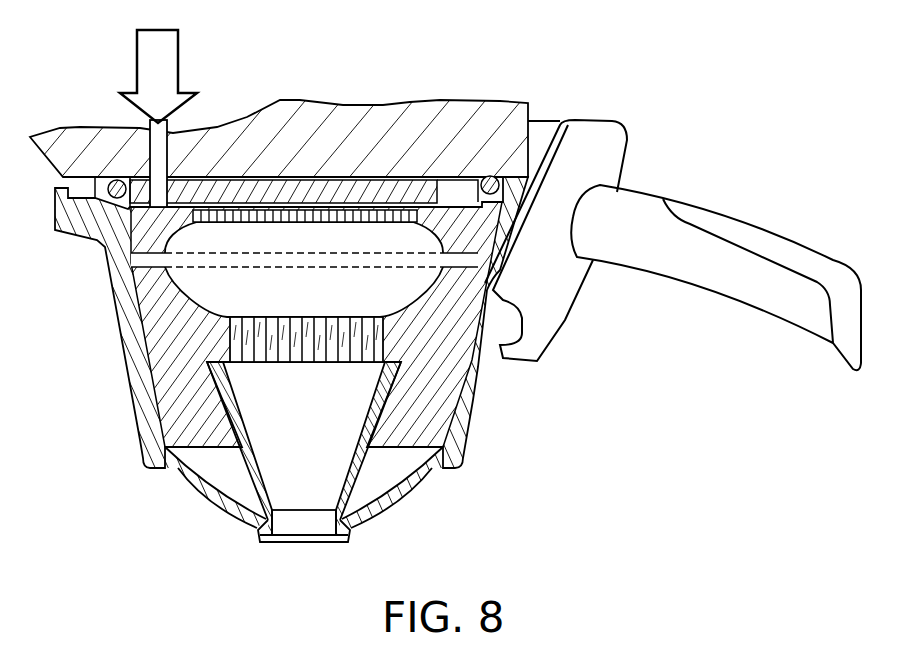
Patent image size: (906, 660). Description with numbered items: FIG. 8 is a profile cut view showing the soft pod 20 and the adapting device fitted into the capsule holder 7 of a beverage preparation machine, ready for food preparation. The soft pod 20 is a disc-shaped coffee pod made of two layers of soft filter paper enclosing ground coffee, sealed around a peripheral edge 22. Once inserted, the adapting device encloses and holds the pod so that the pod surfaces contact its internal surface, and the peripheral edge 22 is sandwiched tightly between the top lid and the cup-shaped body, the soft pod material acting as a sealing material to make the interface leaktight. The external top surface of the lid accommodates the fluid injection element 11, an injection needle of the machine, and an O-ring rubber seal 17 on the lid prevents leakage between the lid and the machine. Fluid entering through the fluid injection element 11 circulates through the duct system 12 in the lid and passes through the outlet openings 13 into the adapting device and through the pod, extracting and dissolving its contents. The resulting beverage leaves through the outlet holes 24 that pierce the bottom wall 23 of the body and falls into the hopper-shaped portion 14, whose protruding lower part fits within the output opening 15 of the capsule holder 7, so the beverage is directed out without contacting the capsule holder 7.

The capsule holder 7 is at (597, 133).
The fluid injection element 11 is at (317, 113).
The duct system 12 is at (222, 207).
The outlet openings 13 is at (390, 215).
The hopper-shaped portion 14 is at (283, 472).
The output opening 15 is at (315, 550).
The O-ring rubber seal 17 is at (115, 172).
The soft pod 20 is at (316, 299).
The peripheral edge 22 is at (257, 268).
The bottom wall 23 is at (297, 363).
The outlet holes 24 is at (333, 348).